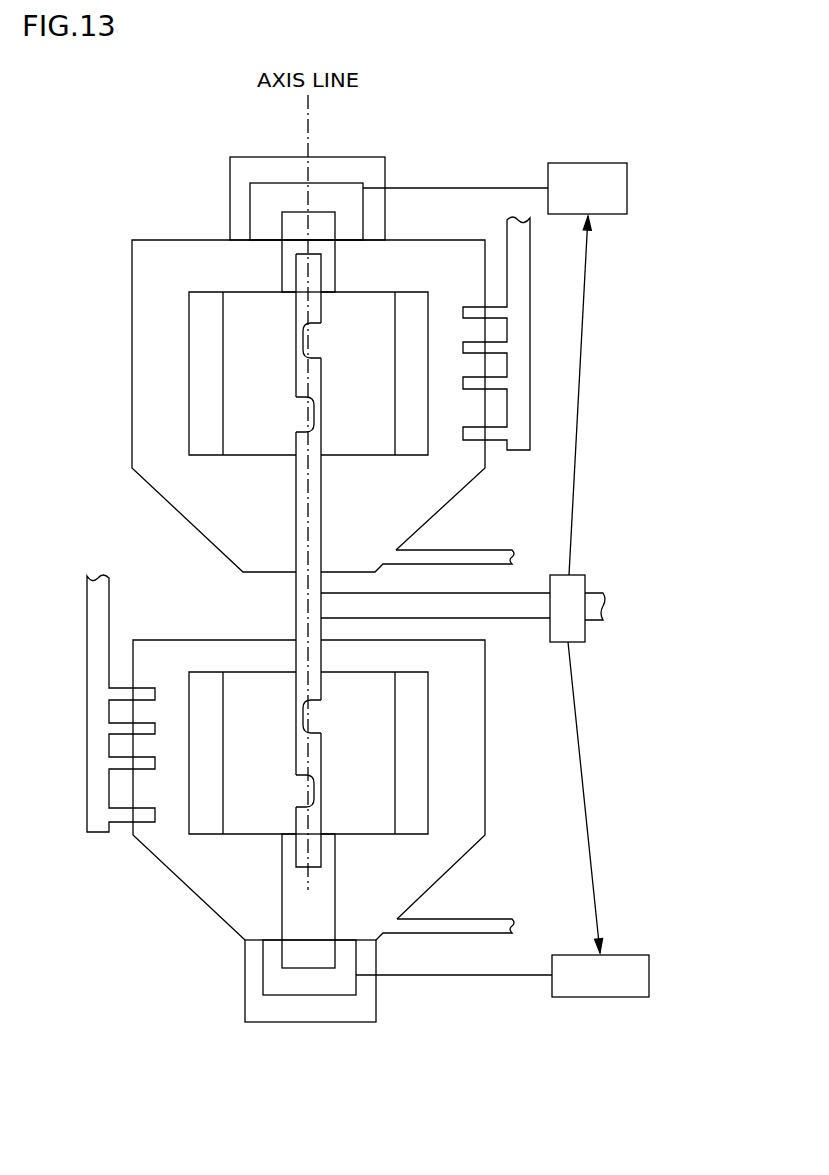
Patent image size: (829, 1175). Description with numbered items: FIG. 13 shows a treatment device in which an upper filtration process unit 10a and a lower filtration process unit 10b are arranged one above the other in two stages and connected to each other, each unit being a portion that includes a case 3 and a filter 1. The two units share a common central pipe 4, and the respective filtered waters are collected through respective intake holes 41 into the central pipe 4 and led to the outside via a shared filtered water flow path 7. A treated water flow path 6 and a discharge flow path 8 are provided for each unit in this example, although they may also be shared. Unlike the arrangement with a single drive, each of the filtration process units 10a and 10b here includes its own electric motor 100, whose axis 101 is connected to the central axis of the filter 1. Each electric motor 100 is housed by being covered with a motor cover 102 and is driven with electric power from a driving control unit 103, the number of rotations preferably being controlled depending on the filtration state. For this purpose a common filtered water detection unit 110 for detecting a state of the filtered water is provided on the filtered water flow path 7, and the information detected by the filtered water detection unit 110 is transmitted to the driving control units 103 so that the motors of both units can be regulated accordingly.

The filter 1 is at (189, 364).
The case 3 is at (132, 300).
The central pipe 4 is at (295, 311).
The treated water flow path 6 is at (530, 262).
The filtered water flow path 7 is at (472, 592).
The discharge flow path 8 is at (478, 550).
The intake hole 41 is at (305, 340).
The electric motor 100 is at (293, 183).
The axis 101 is at (335, 225).
The motor cover 102 is at (245, 157).
The driving control unit 103 is at (590, 163).
The filtered water detection unit 110 is at (578, 575).
The upper filtration process unit 10a is at (614, 367).
The lower filtration process unit 10b is at (614, 770).